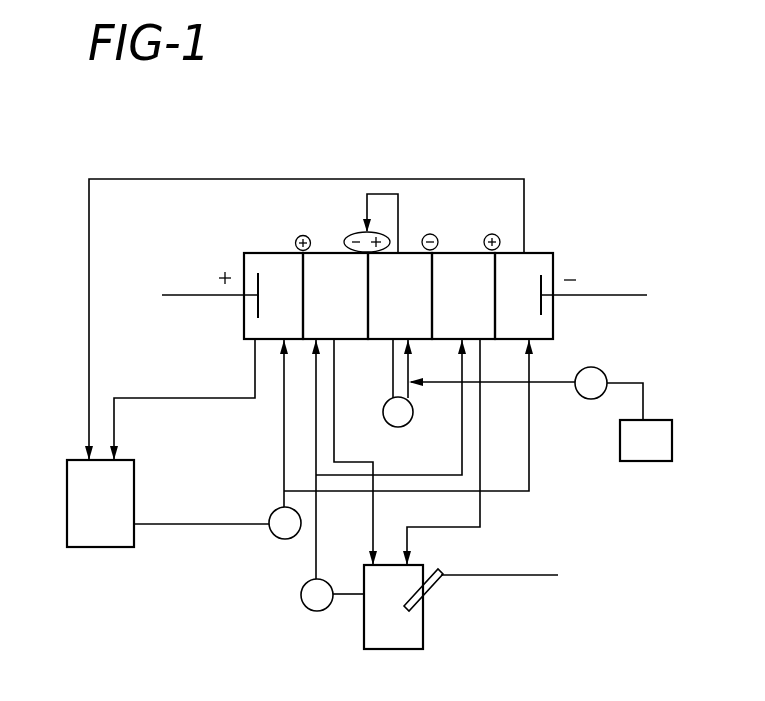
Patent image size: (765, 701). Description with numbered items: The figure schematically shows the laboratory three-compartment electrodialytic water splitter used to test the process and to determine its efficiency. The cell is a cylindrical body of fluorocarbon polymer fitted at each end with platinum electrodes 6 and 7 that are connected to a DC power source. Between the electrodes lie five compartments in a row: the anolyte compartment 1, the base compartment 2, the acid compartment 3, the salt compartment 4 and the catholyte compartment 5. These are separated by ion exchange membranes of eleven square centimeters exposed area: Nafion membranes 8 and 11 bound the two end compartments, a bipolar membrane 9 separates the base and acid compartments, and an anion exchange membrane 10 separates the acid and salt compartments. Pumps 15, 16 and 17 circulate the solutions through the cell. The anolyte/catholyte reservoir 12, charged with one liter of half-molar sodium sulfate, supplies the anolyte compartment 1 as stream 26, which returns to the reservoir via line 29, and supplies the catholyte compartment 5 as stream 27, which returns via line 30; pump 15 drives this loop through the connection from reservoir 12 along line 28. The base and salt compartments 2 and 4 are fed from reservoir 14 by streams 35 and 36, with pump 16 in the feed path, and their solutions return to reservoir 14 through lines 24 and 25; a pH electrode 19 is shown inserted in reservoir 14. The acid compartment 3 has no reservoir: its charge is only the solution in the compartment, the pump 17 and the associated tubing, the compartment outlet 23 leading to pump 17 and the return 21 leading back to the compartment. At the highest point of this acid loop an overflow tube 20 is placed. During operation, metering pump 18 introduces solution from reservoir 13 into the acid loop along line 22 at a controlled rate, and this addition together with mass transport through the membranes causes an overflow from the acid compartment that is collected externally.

The anolyte compartment 1 is at (289, 306).
The base compartment 2 is at (325, 306).
The acid compartment 3 is at (391, 305).
The salt compartment 4 is at (456, 305).
The catholyte compartment 5 is at (506, 305).
The platinum electrode 6 is at (542, 305).
The platinum electrode 7 is at (257, 305).
The Nafion membrane 8 is at (303, 262).
The bipolar membrane 9 is at (367, 268).
The anion exchange membrane 10 is at (432, 267).
The Nafion membrane 11 is at (497, 270).
The anolyte/catholyte reservoir 12 is at (112, 508).
The reservoir 13 is at (636, 452).
The reservoir 14 is at (405, 635).
The pump 15 is at (270, 534).
The pump 16 is at (314, 611).
The pump 17 is at (404, 427).
The metering pump 18 is at (590, 399).
The pH electrode 19 is at (433, 580).
The overflow tube 20 is at (401, 198).
The return line to cell 3 21 is at (420, 395).
The feed line from pump 18 22 is at (411, 366).
The outlet line from cell 3 23 is at (393, 368).
The return line 24 is at (376, 519).
The return line 25 is at (482, 527).
The anolyte stream 26 is at (284, 448).
The catholyte stream 27 is at (363, 492).
The line from reservoir 12 to pump 15 28 is at (196, 524).
The return line 29 is at (150, 398).
The return line 30 is at (89, 362).
The feed stream 35 is at (315, 558).
The feed stream 36 is at (390, 475).